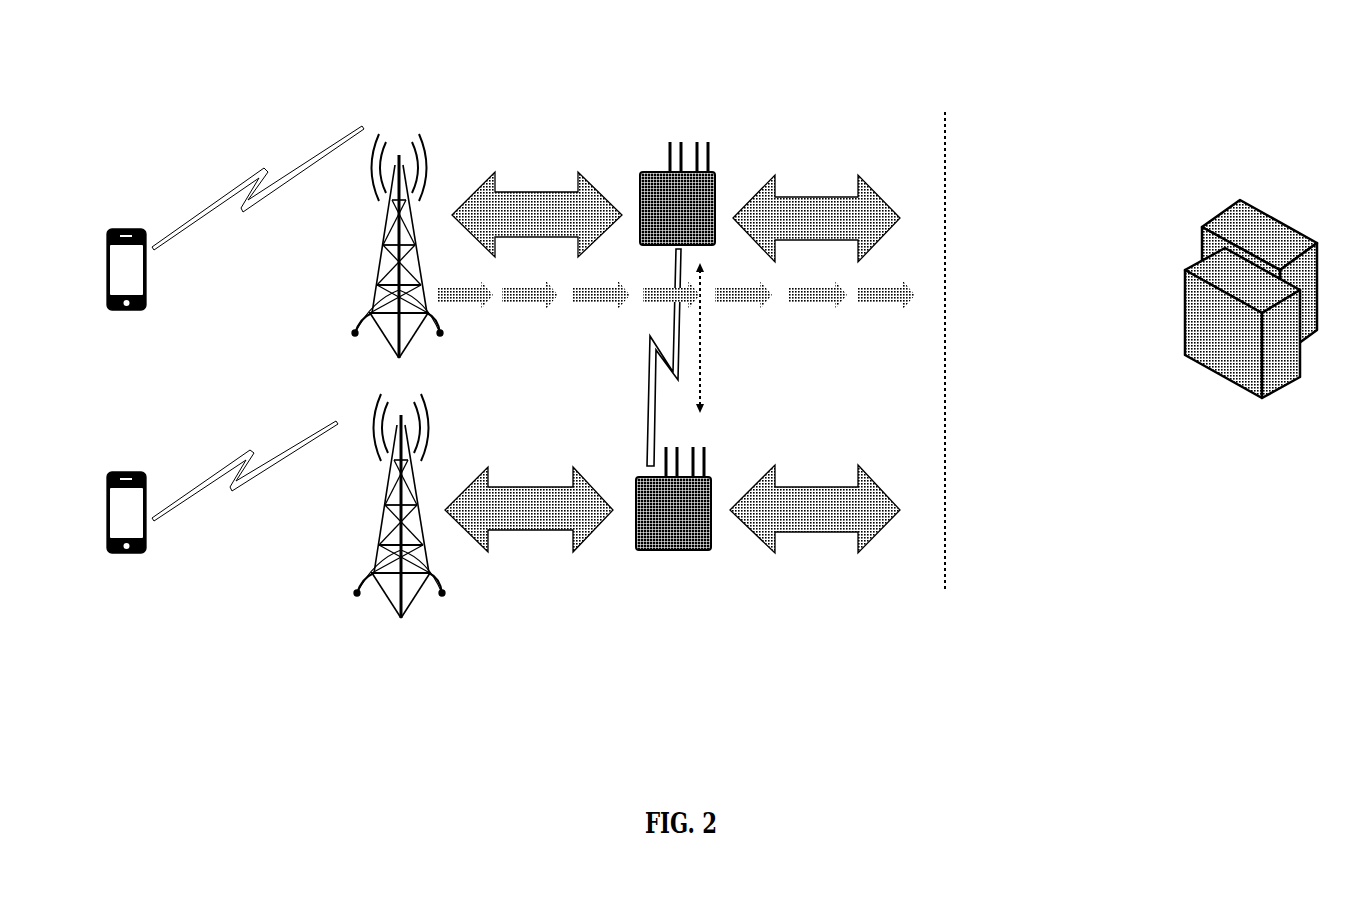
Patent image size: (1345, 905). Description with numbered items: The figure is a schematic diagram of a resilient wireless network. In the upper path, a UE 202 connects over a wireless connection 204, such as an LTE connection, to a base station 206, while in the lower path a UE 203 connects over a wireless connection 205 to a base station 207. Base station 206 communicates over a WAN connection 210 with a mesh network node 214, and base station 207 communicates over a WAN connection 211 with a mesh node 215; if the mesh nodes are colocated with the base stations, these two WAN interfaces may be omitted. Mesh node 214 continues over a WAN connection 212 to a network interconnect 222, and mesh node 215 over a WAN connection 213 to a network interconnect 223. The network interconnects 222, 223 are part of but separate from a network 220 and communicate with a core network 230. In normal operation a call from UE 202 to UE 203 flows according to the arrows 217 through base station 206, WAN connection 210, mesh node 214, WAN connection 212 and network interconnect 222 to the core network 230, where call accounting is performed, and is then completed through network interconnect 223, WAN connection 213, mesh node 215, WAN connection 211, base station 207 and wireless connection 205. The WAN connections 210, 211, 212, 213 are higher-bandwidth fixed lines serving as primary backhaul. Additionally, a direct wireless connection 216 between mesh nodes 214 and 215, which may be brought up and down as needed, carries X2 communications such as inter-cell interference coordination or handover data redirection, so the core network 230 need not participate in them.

The UE 202 is at (100, 228).
The UE 203 is at (100, 477).
The wireless connection 204 is at (212, 200).
The wireless connection 205 is at (212, 468).
The base station 206 is at (368, 300).
The base station 207 is at (368, 572).
The WAN connection 210 is at (528, 188).
The WAN connection 211 is at (530, 483).
The WAN connection 212 is at (815, 185).
The WAN connection 213 is at (815, 482).
The mesh network node 214 is at (690, 132).
The mesh node 215 is at (690, 582).
The connection 216 is at (708, 392).
The arrows 217 is at (853, 310).
The network 220 is at (1032, 72).
The network interconnect 222 is at (1032, 228).
The network interconnect 223 is at (1032, 487).
The core network 230 is at (1190, 222).